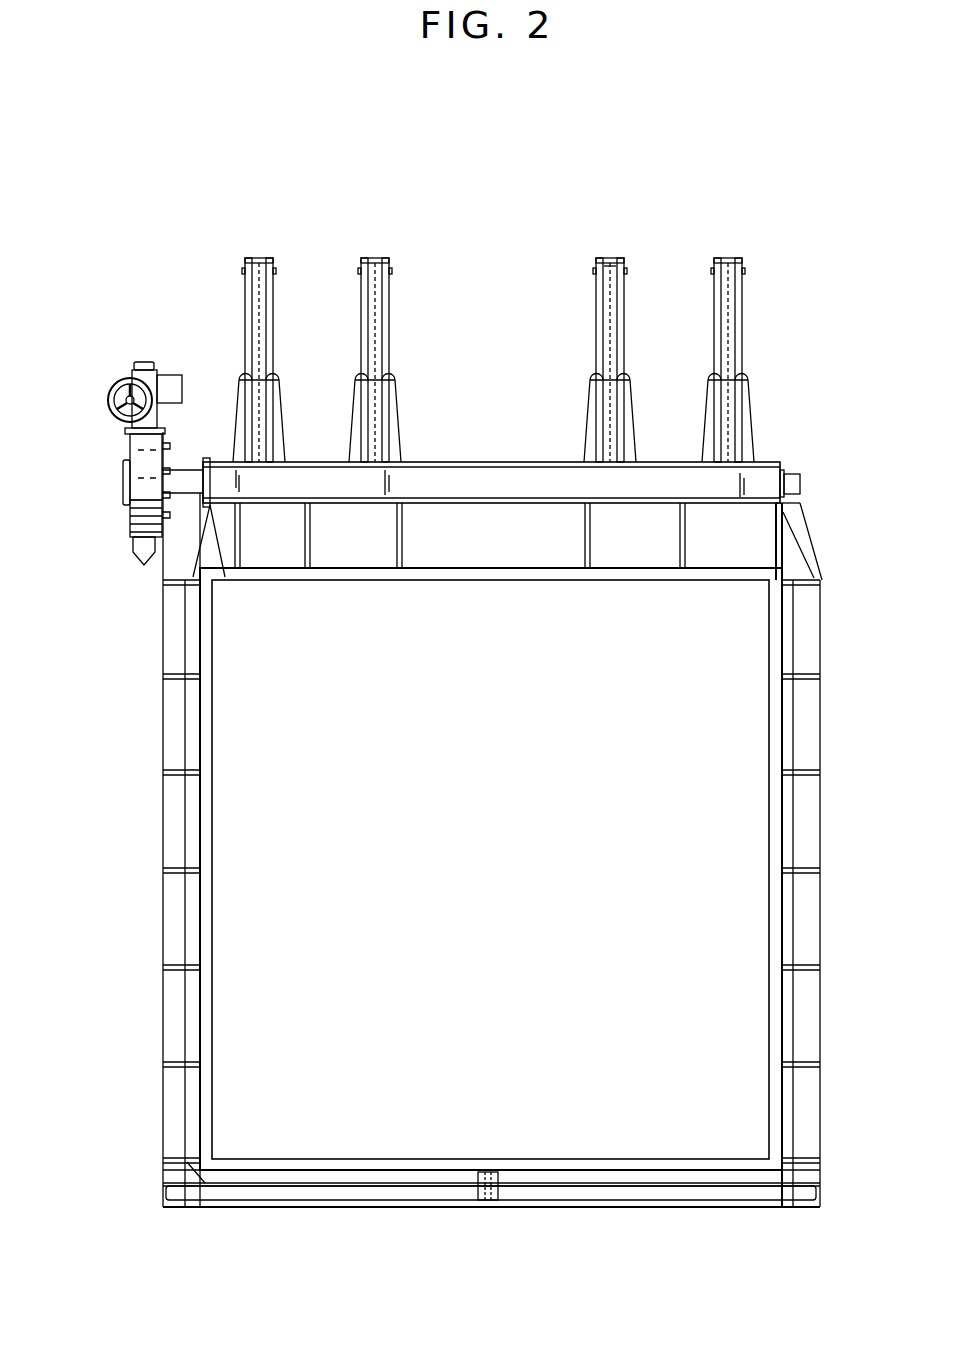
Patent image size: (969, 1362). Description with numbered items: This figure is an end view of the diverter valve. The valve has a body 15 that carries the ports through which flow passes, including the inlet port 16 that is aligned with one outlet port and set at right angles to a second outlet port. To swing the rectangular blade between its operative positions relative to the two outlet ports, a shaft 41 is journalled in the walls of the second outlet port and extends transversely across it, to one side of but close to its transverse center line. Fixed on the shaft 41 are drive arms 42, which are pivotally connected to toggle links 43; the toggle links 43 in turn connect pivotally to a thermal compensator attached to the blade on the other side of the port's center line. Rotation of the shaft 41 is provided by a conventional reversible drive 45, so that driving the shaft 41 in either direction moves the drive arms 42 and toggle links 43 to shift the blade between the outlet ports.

The body 15 is at (452, 1208).
The inlet port 16 is at (285, 1120).
The shaft 41 is at (185, 477).
The drive arms 42 is at (360, 303).
The toggle links 43 is at (612, 258).
The reversible drive 45 is at (137, 515).